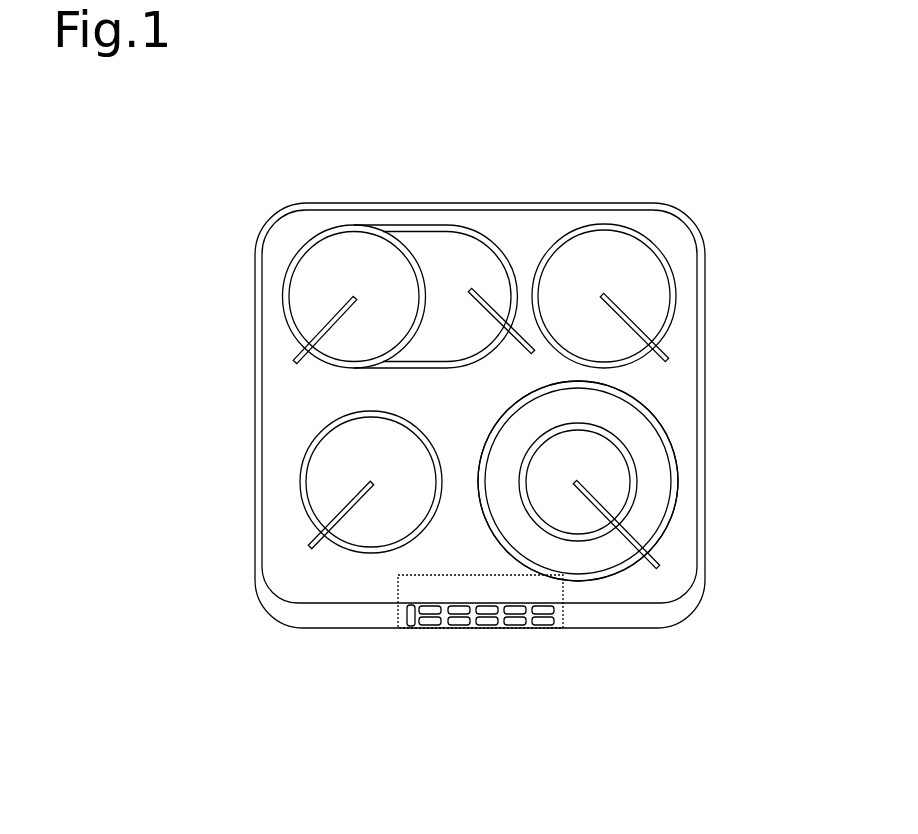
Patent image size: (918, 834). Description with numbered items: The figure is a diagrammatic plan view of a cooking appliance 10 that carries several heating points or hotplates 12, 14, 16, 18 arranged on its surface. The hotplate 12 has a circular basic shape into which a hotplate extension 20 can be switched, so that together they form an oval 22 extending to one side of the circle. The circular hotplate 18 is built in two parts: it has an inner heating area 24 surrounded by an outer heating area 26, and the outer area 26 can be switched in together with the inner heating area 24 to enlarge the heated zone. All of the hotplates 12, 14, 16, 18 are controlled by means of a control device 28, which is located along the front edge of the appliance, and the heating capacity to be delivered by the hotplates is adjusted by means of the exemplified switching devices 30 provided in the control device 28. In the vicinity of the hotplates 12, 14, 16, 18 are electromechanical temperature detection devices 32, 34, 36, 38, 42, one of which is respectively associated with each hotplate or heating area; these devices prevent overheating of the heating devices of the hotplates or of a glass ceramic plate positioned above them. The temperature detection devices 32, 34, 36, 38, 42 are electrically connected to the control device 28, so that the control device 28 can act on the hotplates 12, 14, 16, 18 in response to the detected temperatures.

The cooking appliance 10 is at (737, 168).
The hotplate 12 is at (343, 260).
The hotplate 14 is at (605, 262).
The hotplate 16 is at (335, 483).
The circular hotplate 18 is at (643, 498).
The hotplate extension 20 is at (457, 270).
The oval 22 is at (408, 229).
The inner heating area 24 is at (597, 452).
The outer heating area 26 is at (610, 418).
The control device 28 is at (417, 587).
The switching devices 30 is at (543, 623).
The electromechanical temperature detection device 32 is at (333, 333).
The electromechanical temperature detection device 34 is at (490, 305).
The electromechanical temperature detection device 36 is at (633, 322).
The electromechanical temperature detection device 38 is at (655, 542).
The electromechanical temperature detection device 42 is at (340, 514).